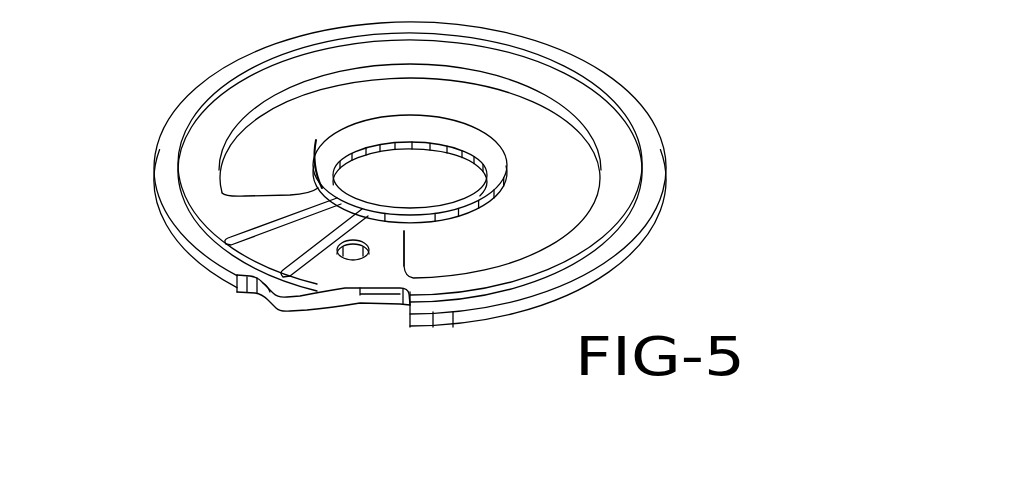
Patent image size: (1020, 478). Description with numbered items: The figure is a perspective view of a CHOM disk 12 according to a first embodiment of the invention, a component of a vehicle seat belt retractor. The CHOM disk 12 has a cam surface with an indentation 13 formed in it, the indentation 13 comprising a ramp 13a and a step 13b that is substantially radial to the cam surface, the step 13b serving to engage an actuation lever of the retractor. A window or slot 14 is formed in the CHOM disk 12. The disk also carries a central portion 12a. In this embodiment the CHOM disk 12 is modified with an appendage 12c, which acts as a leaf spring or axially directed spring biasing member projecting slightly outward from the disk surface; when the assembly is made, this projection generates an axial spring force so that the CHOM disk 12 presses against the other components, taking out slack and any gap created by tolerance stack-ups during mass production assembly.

The CHOM disk 12 is at (553, 43).
The central hub 12a is at (347, 133).
The appendage 12c is at (283, 238).
The indentation 13 is at (213, 270).
The ramp 13a is at (271, 302).
The step 13b is at (414, 323).
The window or slot 14 is at (545, 148).